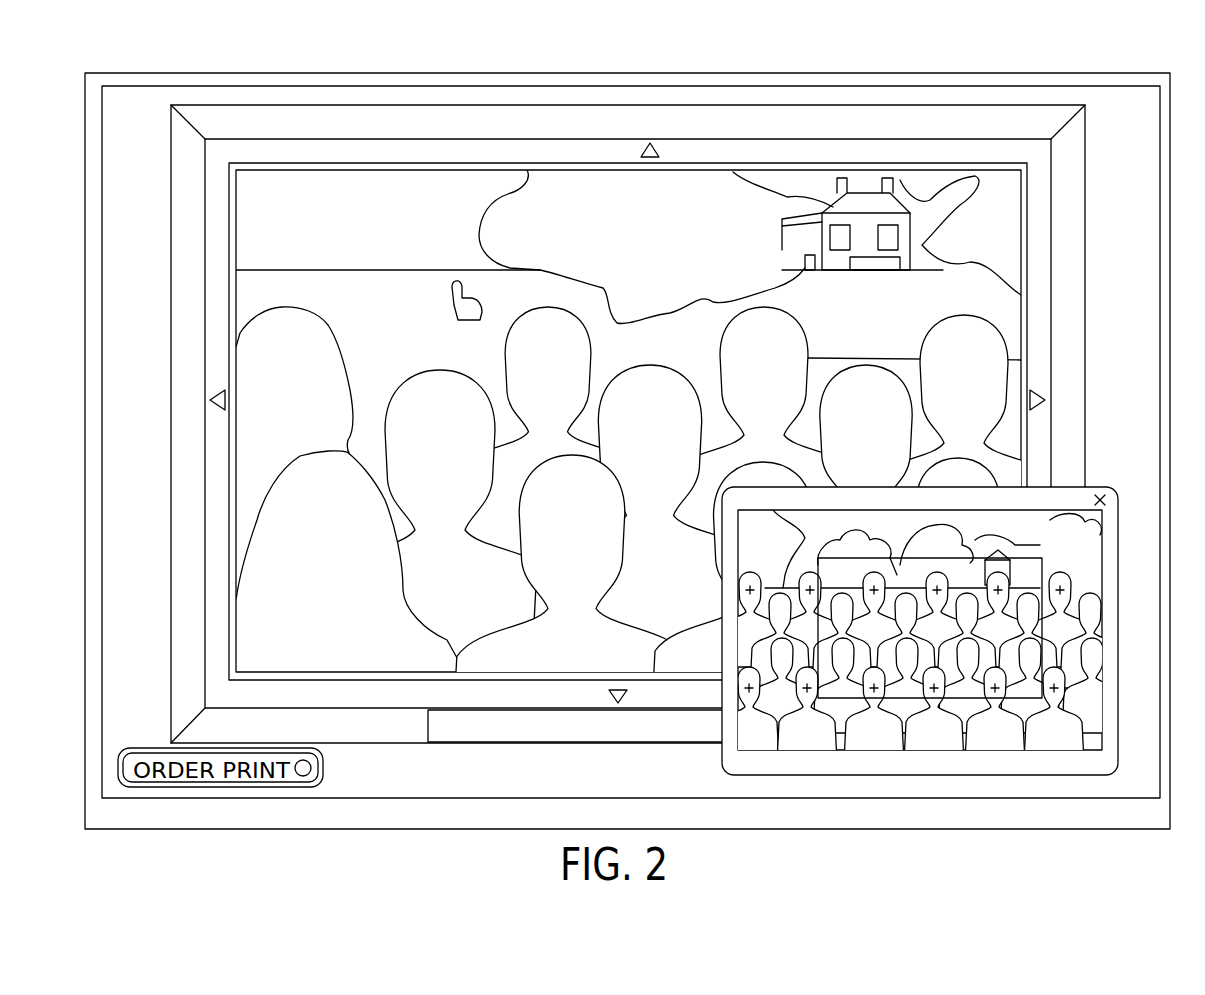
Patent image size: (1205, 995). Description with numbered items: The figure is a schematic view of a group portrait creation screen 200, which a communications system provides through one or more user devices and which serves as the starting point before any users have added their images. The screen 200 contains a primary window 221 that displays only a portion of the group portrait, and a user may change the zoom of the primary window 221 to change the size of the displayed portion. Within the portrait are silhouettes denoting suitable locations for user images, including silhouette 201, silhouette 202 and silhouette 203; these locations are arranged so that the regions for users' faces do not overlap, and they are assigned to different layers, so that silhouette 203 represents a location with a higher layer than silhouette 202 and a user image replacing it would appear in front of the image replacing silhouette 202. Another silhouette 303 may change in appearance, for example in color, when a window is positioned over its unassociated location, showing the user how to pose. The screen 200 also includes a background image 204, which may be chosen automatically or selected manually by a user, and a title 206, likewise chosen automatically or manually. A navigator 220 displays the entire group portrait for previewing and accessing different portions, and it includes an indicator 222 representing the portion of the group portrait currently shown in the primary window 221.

The screen 200 is at (987, 65).
The silhouette 201 is at (595, 504).
The silhouette 202 is at (293, 307).
The silhouette 203 is at (256, 522).
The background image 204 is at (932, 241).
The title 206 is at (565, 744).
The navigator 220 is at (929, 616).
The primary window 221 is at (1022, 363).
The indicator 222 is at (993, 703).
The silhouette 303 is at (388, 396).